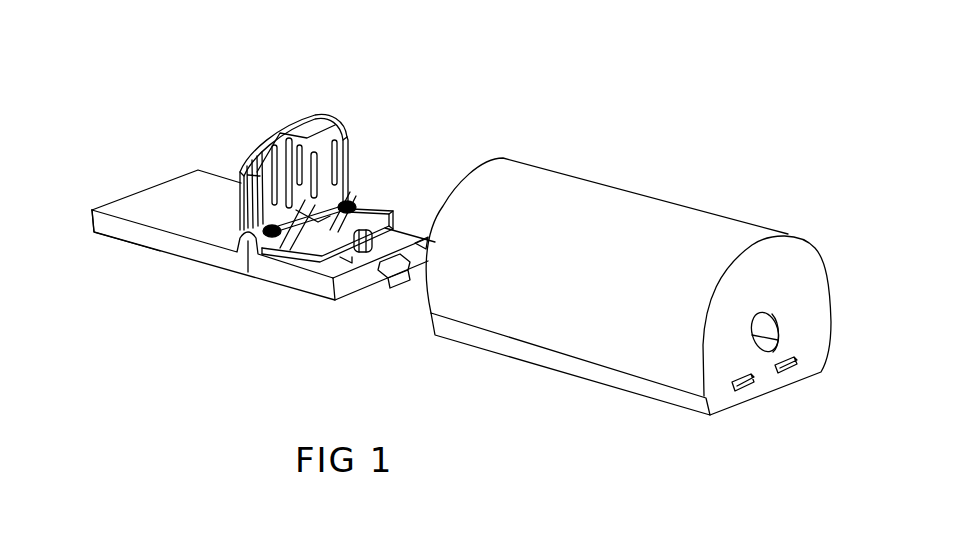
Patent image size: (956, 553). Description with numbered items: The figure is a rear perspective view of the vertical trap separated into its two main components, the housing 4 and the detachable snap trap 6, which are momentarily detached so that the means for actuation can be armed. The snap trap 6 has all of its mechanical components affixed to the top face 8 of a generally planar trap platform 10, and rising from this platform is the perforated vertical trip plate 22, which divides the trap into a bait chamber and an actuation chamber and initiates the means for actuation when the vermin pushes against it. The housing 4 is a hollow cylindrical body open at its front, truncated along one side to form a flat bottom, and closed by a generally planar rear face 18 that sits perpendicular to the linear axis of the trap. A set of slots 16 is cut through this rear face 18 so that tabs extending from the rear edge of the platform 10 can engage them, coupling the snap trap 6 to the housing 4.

The housing 4 is at (653, 200).
The snap trap 6 is at (166, 302).
The top face 8 is at (177, 187).
The trap platform 10 is at (105, 208).
The slots 16 is at (750, 383).
The rear face 18 is at (774, 262).
The vertical trip plate 22 is at (337, 123).